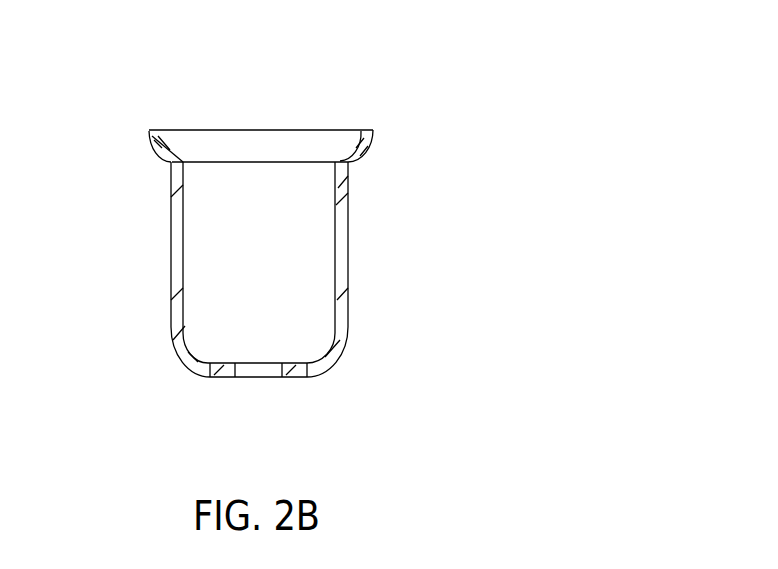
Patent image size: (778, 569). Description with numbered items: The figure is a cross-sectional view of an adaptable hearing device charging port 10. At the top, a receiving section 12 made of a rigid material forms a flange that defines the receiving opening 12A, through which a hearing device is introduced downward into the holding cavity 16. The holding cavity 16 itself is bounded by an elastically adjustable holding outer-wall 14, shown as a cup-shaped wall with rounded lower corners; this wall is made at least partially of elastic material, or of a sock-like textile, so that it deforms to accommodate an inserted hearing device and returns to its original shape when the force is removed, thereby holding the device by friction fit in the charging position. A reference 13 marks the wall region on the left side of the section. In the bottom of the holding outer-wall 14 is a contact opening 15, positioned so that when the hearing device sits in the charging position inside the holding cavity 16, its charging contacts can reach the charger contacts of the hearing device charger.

The adaptable hearing device charging port 10 is at (264, 232).
The receiving section 12 is at (304, 88).
The receiving opening 12A is at (297, 163).
The outer wall 13 is at (170, 240).
The holding outer-wall 14 is at (345, 250).
The contact opening 15 is at (258, 377).
The holding cavity 16 is at (277, 275).